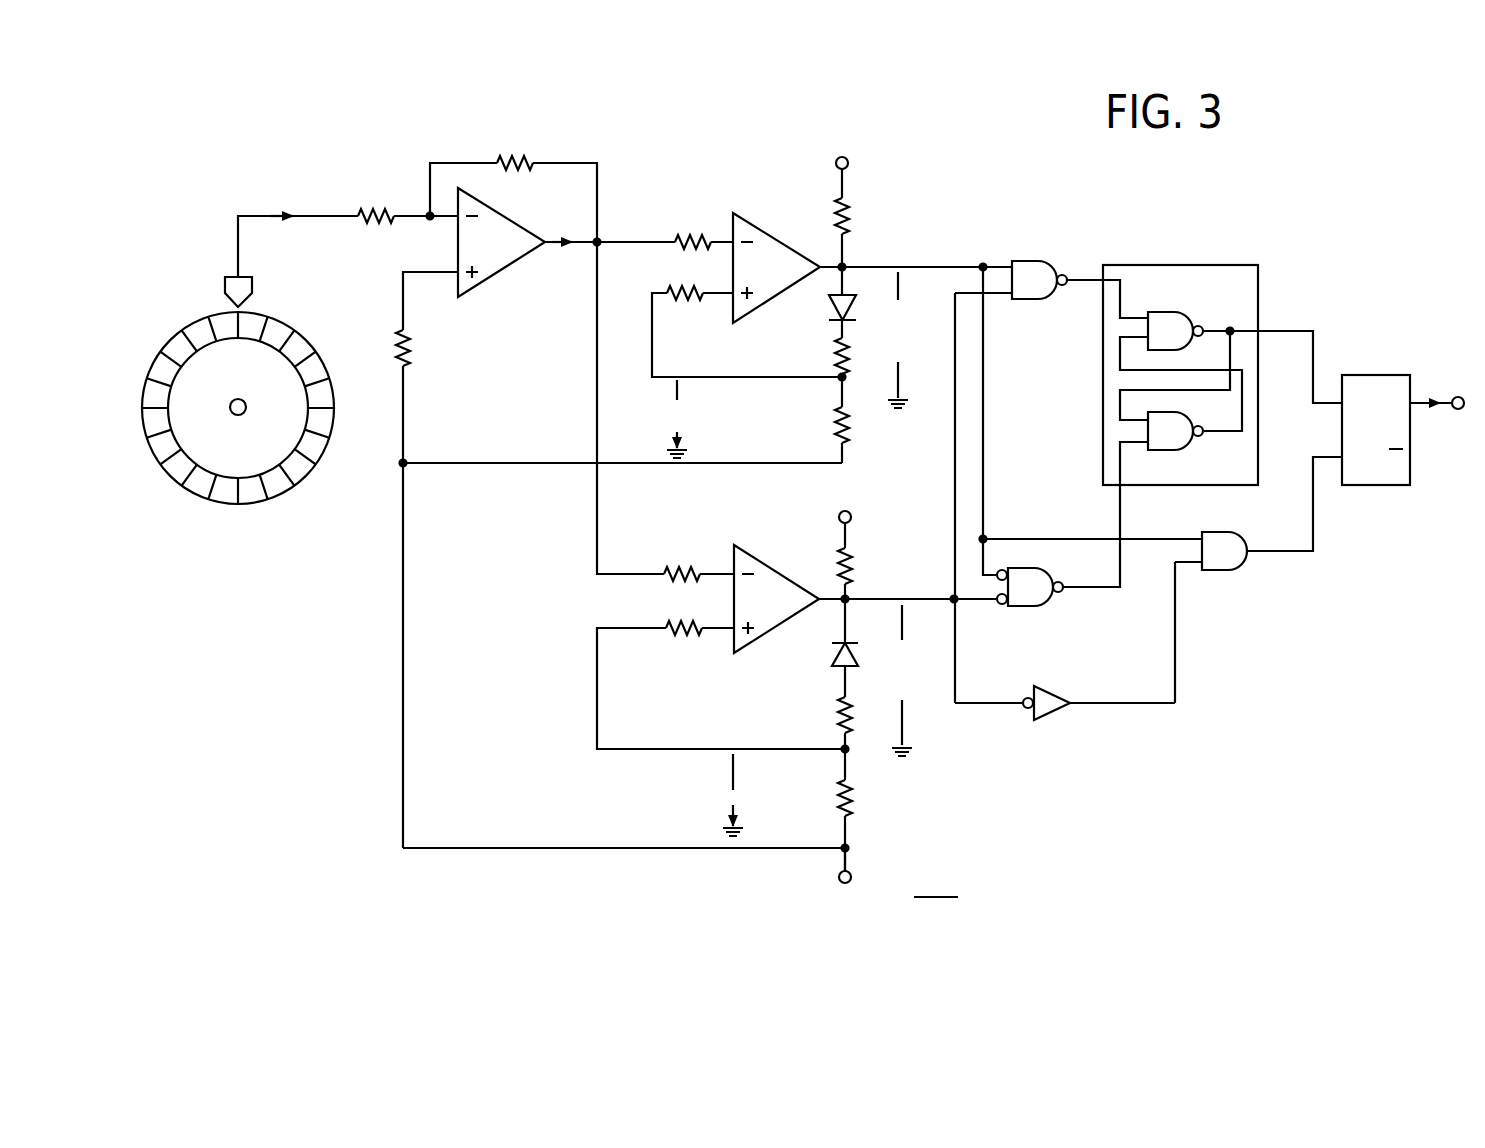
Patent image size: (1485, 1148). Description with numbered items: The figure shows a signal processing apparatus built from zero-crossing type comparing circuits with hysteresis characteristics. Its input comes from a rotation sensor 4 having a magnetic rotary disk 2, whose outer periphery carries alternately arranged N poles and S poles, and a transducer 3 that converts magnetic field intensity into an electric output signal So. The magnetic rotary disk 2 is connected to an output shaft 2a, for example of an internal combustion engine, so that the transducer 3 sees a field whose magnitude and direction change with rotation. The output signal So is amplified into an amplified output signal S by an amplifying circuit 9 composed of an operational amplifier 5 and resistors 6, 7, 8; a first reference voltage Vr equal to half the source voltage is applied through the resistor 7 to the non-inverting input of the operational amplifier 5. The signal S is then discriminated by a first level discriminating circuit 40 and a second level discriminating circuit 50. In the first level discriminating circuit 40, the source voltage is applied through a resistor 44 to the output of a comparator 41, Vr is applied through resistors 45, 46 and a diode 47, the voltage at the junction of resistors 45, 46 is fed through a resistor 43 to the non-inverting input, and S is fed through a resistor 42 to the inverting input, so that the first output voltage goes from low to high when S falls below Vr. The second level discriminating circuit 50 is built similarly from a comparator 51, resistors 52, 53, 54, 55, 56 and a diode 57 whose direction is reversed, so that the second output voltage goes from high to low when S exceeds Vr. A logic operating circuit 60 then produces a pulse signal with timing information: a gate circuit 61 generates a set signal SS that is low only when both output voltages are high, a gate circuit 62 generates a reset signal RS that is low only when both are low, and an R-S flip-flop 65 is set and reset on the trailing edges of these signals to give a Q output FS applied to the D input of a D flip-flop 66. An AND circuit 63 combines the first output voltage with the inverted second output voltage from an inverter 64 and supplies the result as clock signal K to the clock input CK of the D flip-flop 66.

The magnetic rotary disk 2 is at (180, 341).
The output shaft 2a is at (238, 415).
The transducer 3 is at (252, 285).
The rotation sensor 4 is at (191, 313).
The operational amplifier 5 is at (500, 258).
The resistor 6 is at (376, 209).
The resistor 7 is at (412, 356).
The resistor 8 is at (515, 157).
The amplifying circuit 9 is at (460, 140).
The first level discriminating circuit 40 is at (727, 182).
The comparator 41 is at (772, 247).
The resistor 42 is at (680, 239).
The resistor 43 is at (684, 309).
The resistor 44 is at (850, 218).
The resistor 45 is at (836, 353).
The resistor 46 is at (836, 422).
The diode 47 is at (830, 308).
The second level discriminating circuit 50 is at (614, 616).
The comparator 51 is at (770, 580).
The resistor 52 is at (683, 572).
The resistor 53 is at (680, 636).
The resistor 54 is at (852, 557).
The resistor 55 is at (838, 715).
The resistor 56 is at (852, 801).
The diode 57 is at (832, 656).
The logic operating circuit 60 is at (1058, 238).
The gate circuit 61 is at (1025, 262).
The gate circuit 62 is at (1025, 607).
The AND circuit 63 is at (1224, 572).
The inverter 64 is at (1044, 722).
The R-S flip-flop 65 is at (1198, 265).
The D flip-flop 66 is at (1372, 376).